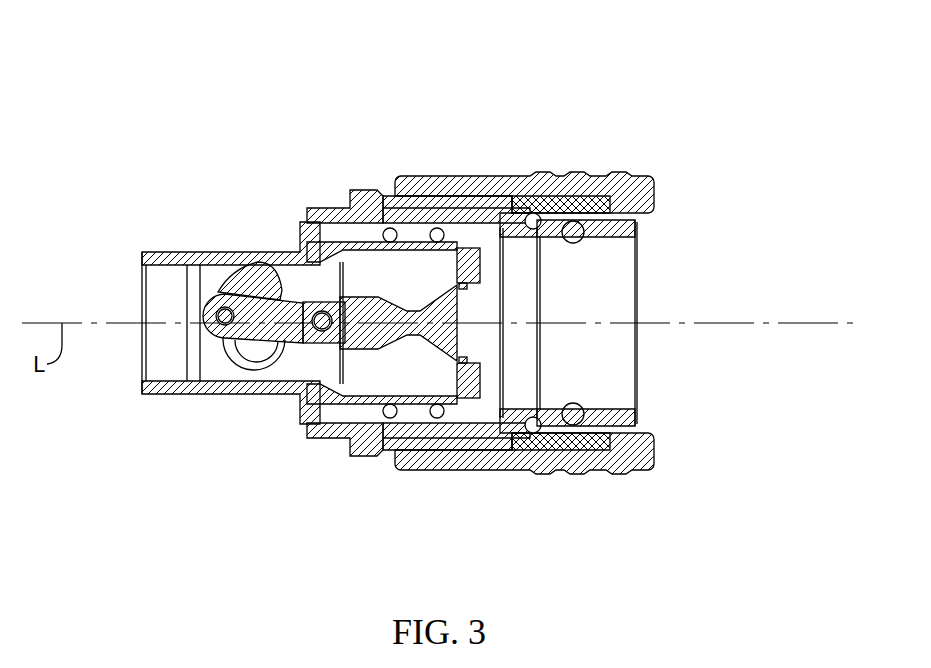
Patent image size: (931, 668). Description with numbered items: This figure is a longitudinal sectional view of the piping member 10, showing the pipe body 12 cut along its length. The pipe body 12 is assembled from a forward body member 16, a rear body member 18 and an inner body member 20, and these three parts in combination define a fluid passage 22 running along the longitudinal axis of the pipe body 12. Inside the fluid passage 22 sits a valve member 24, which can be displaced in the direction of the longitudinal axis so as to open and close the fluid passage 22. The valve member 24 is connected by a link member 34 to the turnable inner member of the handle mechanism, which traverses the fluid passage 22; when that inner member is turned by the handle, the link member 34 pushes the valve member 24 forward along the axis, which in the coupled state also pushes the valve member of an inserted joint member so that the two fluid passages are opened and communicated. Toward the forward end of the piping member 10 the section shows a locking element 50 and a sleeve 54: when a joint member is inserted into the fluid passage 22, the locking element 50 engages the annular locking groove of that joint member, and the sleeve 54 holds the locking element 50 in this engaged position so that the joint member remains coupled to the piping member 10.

The piping member 10 is at (286, 110).
The pipe body 12 is at (448, 108).
The forward body member 16 is at (467, 207).
The rear body member 18 is at (322, 210).
The inner body member 20 is at (410, 215).
The fluid passage 22 is at (575, 313).
The valve member 24 is at (416, 340).
The link member 34 is at (253, 342).
The locking element 50 is at (573, 232).
The sleeve 54 is at (553, 207).